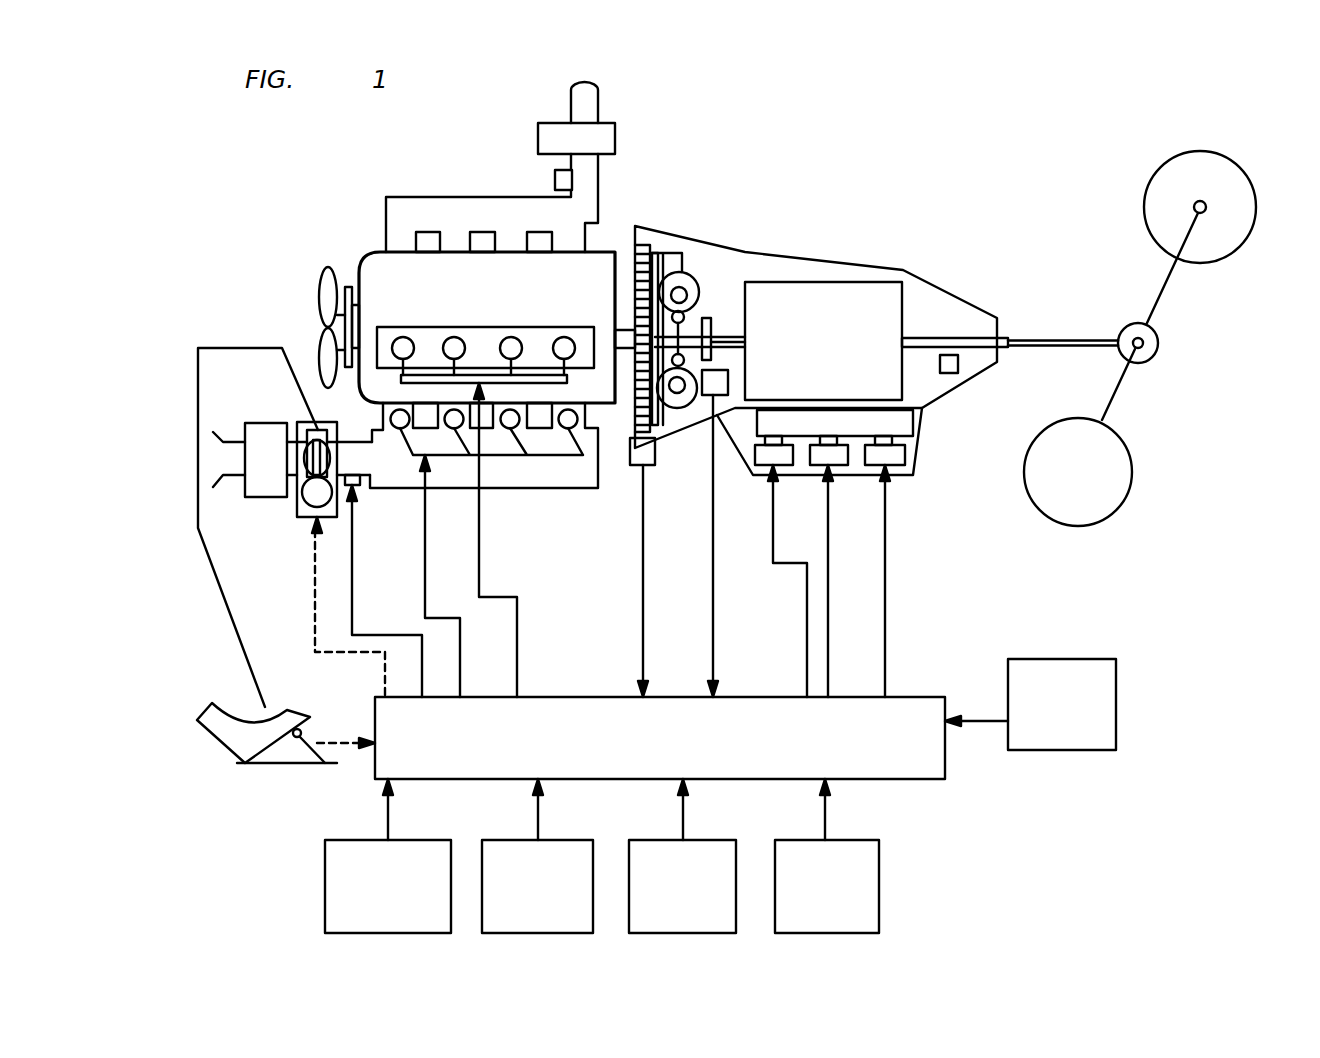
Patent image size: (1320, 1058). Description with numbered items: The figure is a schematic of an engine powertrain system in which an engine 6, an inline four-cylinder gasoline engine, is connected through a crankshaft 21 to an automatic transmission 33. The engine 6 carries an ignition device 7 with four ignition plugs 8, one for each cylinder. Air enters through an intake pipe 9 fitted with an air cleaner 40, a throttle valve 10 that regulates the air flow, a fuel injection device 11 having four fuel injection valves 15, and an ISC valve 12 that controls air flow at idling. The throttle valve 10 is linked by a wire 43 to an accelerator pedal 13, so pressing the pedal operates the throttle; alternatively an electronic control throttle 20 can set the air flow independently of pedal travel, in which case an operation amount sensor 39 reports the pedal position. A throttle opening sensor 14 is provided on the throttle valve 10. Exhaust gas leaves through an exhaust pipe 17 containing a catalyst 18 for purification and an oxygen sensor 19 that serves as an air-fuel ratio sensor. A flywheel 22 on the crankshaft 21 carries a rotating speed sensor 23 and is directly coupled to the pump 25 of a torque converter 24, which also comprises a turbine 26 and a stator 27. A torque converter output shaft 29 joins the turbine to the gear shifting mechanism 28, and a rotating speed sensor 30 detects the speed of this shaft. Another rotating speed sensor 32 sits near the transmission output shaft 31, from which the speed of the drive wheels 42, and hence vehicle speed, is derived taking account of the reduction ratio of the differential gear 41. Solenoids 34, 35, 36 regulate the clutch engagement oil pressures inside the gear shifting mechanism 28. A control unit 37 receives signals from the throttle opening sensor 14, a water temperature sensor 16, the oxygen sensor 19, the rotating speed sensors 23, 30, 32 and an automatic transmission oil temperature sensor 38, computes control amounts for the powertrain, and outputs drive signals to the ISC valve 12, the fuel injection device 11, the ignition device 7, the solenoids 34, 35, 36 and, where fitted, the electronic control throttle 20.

The engine 6 is at (363, 260).
The ignition device 7 is at (535, 377).
The ignition plugs 8 is at (403, 338).
The intake pipe 9 is at (505, 490).
The throttle valve 10 is at (322, 460).
The fuel injection device 11 is at (462, 458).
The ISC valve 12 is at (355, 487).
The accelerator pedal 13 is at (270, 750).
The throttle opening sensor 14 is at (318, 432).
The fuel injection valves 15 is at (564, 430).
The water temperature sensor 16 is at (565, 840).
The exhaust pipe 17 is at (425, 195).
The catalyst 18 is at (615, 130).
The oxygen sensor 19 is at (555, 180).
The electronic control throttle 20 is at (300, 513).
The crankshaft 21 is at (625, 330).
The flywheel 22 is at (642, 247).
The rotating speed sensor 23 is at (652, 467).
The torque converter 24 is at (683, 318).
The pump 25 is at (682, 293).
The turbine 26 is at (663, 425).
The stator 27 is at (704, 322).
The gear shifting mechanism 28 is at (873, 283).
The torque converter output shaft 29 is at (725, 335).
The rotating speed sensor 30 is at (710, 397).
The transmission output shaft 31 is at (960, 337).
The rotating speed sensor 32 is at (958, 368).
The automatic transmission 33 is at (940, 402).
The solenoid 34 is at (790, 463).
The solenoid 35 is at (842, 462).
The solenoid 36 is at (900, 463).
The control unit 37 is at (920, 697).
The automatic transmission oil temperature sensor 38 is at (1116, 704).
The operation amount sensor 39 is at (310, 753).
The air cleaner 40 is at (265, 497).
The differential gear 41 is at (1158, 350).
The drive wheels 42 is at (1223, 258).
The wire 43 is at (230, 348).